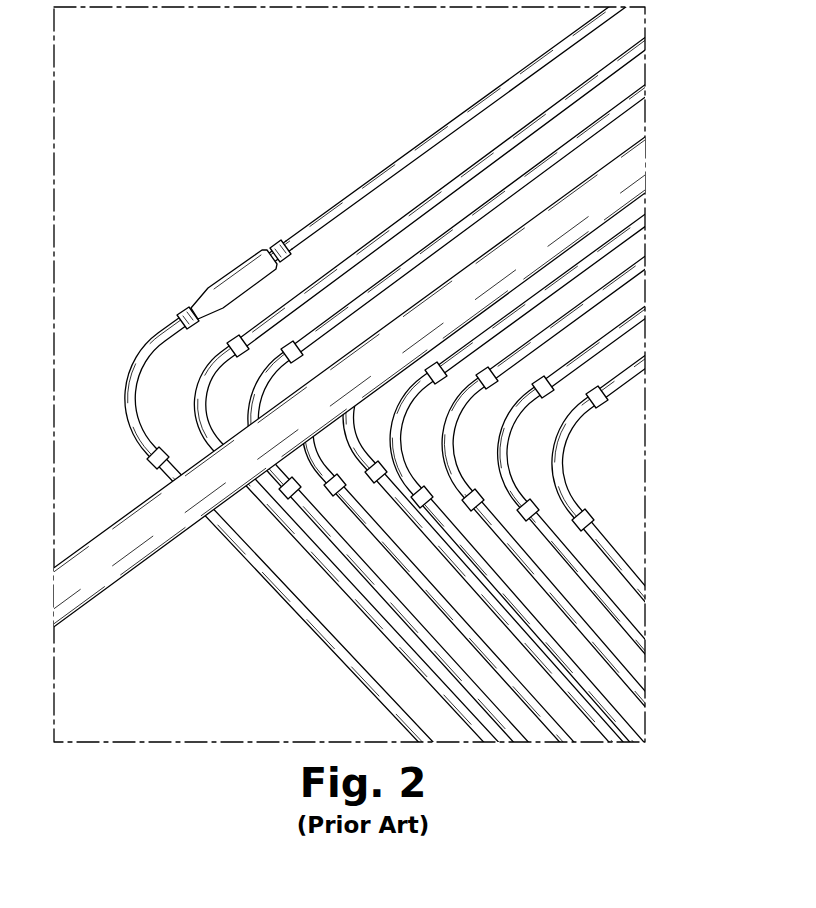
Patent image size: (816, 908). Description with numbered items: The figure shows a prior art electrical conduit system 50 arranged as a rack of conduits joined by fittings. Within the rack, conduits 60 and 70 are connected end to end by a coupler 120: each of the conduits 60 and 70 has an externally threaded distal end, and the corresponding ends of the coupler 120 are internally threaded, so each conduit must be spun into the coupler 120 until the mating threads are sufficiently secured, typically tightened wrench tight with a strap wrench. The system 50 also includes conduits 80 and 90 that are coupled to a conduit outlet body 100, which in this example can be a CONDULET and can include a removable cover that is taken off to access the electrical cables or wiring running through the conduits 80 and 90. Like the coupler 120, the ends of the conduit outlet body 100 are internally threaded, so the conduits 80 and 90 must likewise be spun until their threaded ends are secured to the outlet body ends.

The electrical conduit system 50 is at (662, 486).
The conduit 60 is at (413, 210).
The conduit 70 is at (180, 412).
The conduit 80 is at (324, 212).
The conduit 90 is at (143, 352).
The conduit outlet body 100 is at (228, 273).
The coupler 120 is at (232, 340).